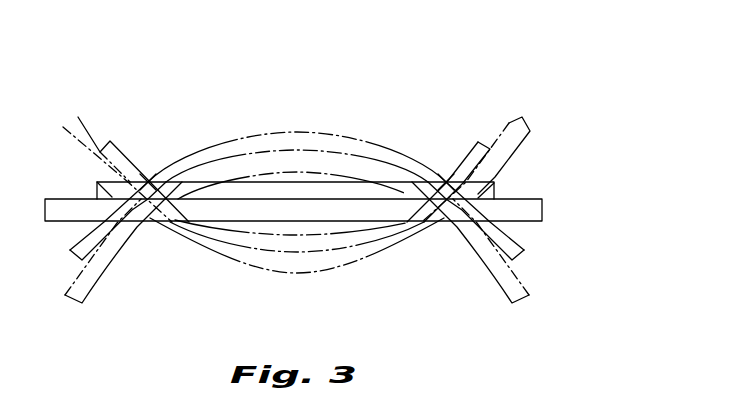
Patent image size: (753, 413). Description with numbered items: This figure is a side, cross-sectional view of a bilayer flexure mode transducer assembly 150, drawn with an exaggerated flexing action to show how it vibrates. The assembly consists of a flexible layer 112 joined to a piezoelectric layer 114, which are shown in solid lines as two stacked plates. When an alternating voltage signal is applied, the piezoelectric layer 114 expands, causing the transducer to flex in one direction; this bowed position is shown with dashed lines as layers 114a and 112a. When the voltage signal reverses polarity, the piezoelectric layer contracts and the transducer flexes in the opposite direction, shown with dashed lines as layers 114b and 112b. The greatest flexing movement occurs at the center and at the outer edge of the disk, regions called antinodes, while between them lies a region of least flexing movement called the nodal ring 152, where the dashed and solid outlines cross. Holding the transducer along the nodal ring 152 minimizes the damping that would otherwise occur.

The flexible layer 112 is at (543, 210).
The flexible layer in first flexed position 112a is at (522, 300).
The flexible layer in opposite flexed position 112b is at (520, 124).
The piezoelectric layer 114 is at (494, 192).
The piezoelectric layer in first flexed position 114a is at (518, 256).
The piezoelectric layer in opposite flexed position 114b is at (476, 146).
The flexure mode transducer assembly 150 is at (233, 110).
The nodal ring 152 is at (148, 182).